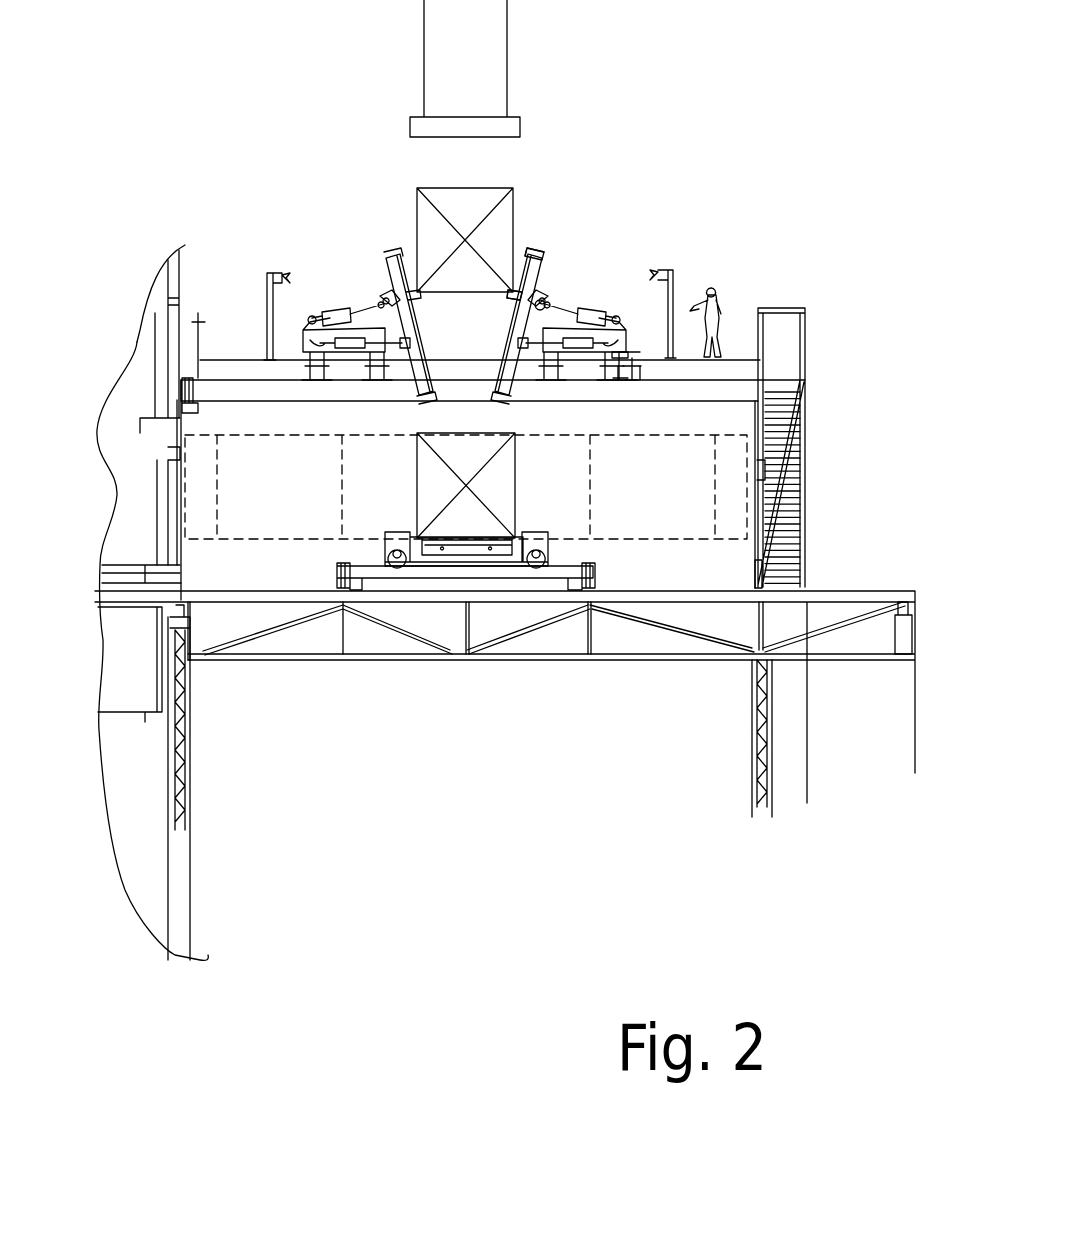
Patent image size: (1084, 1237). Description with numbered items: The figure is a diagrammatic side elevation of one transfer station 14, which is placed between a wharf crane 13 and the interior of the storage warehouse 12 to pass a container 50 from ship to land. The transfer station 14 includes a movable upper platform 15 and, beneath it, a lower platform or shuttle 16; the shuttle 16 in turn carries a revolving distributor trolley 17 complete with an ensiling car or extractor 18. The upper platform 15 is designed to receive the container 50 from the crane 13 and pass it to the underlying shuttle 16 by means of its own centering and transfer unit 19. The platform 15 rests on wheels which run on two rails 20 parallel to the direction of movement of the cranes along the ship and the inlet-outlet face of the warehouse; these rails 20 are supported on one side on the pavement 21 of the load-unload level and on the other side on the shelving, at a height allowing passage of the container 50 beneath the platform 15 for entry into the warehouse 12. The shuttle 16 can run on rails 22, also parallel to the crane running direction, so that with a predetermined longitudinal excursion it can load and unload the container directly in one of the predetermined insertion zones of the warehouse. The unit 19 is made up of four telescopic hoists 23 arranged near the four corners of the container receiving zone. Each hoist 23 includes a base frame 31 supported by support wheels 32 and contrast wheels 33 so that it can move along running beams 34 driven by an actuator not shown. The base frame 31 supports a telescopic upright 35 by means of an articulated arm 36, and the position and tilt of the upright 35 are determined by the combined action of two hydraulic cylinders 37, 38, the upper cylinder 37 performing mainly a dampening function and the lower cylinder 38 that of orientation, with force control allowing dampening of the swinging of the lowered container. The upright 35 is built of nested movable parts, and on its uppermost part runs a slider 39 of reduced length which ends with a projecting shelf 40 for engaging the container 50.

The storage warehouse 12 is at (137, 342).
The wharf crane 13 is at (510, 57).
The transfer station 14 is at (797, 134).
The movable upper platform 15 is at (727, 357).
The shuttle 16 is at (608, 570).
The revolving distributor trolley 17 is at (383, 550).
The ensiling car 18 is at (480, 545).
The centering and transfer unit 19 is at (390, 158).
The rails 20 is at (186, 378).
The pavement 21 is at (290, 602).
The rails 22 is at (350, 586).
The telescopic hoist 23 is at (356, 298).
The base frame 31 is at (624, 320).
The support wheels 32 is at (627, 347).
The contrast wheels 33 is at (630, 365).
The running beams 34 is at (622, 378).
The telescopic upright 35 is at (532, 250).
The articulated arm 36 is at (545, 300).
The upper hydraulic cylinder 37 is at (610, 287).
The lower hydraulic cylinder 38 is at (578, 347).
The slider 39 is at (516, 285).
The projecting shelf 40 is at (423, 293).
The container 50 is at (487, 187).